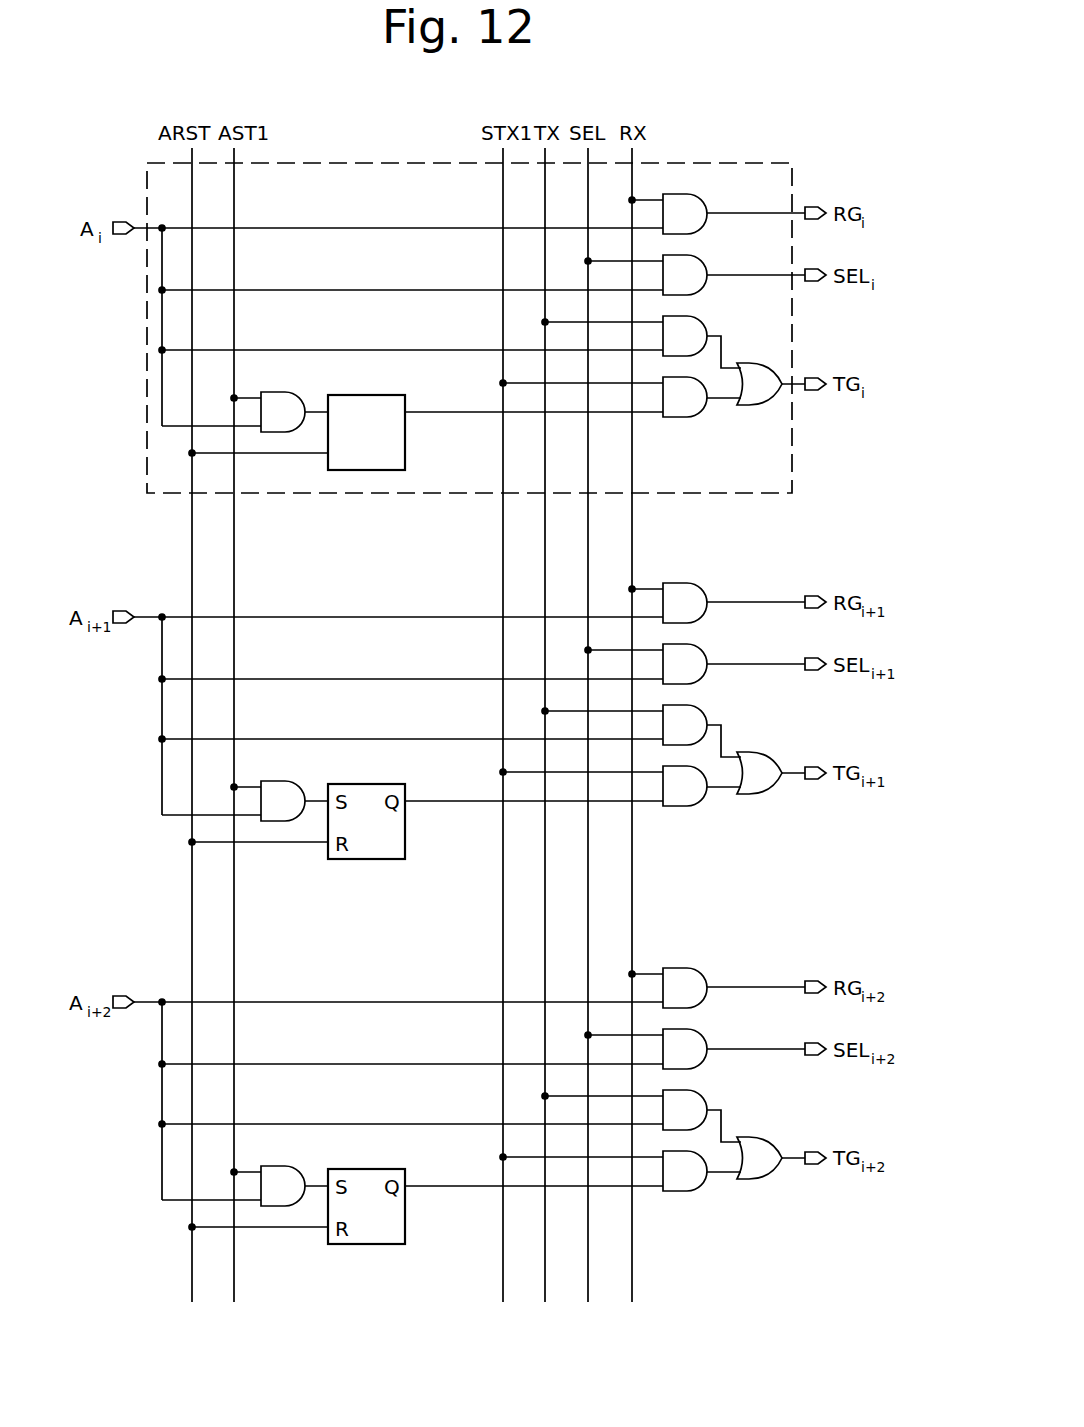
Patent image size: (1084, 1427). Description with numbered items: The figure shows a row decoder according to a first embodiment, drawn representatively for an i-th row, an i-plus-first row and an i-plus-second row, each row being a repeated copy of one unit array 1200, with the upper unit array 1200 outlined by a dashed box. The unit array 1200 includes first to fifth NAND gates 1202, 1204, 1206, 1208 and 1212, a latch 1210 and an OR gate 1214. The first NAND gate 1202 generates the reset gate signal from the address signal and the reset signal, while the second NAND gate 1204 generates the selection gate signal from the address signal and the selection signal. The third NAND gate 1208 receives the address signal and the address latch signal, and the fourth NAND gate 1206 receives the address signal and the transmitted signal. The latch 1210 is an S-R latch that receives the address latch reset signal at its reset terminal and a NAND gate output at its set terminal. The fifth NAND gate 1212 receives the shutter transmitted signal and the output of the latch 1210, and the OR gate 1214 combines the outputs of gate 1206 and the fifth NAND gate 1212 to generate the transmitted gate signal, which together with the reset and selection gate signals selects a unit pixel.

The unit array 1200 is at (725, 162).
The first NAND gate 1202 is at (695, 195).
The second NAND gate 1204 is at (695, 256).
The fourth NAND gate 1206 is at (695, 317).
The third NAND gate 1208 is at (278, 392).
The latch 1210 is at (382, 395).
The fifth NAND gate 1212 is at (673, 419).
The OR gate 1214 is at (745, 404).